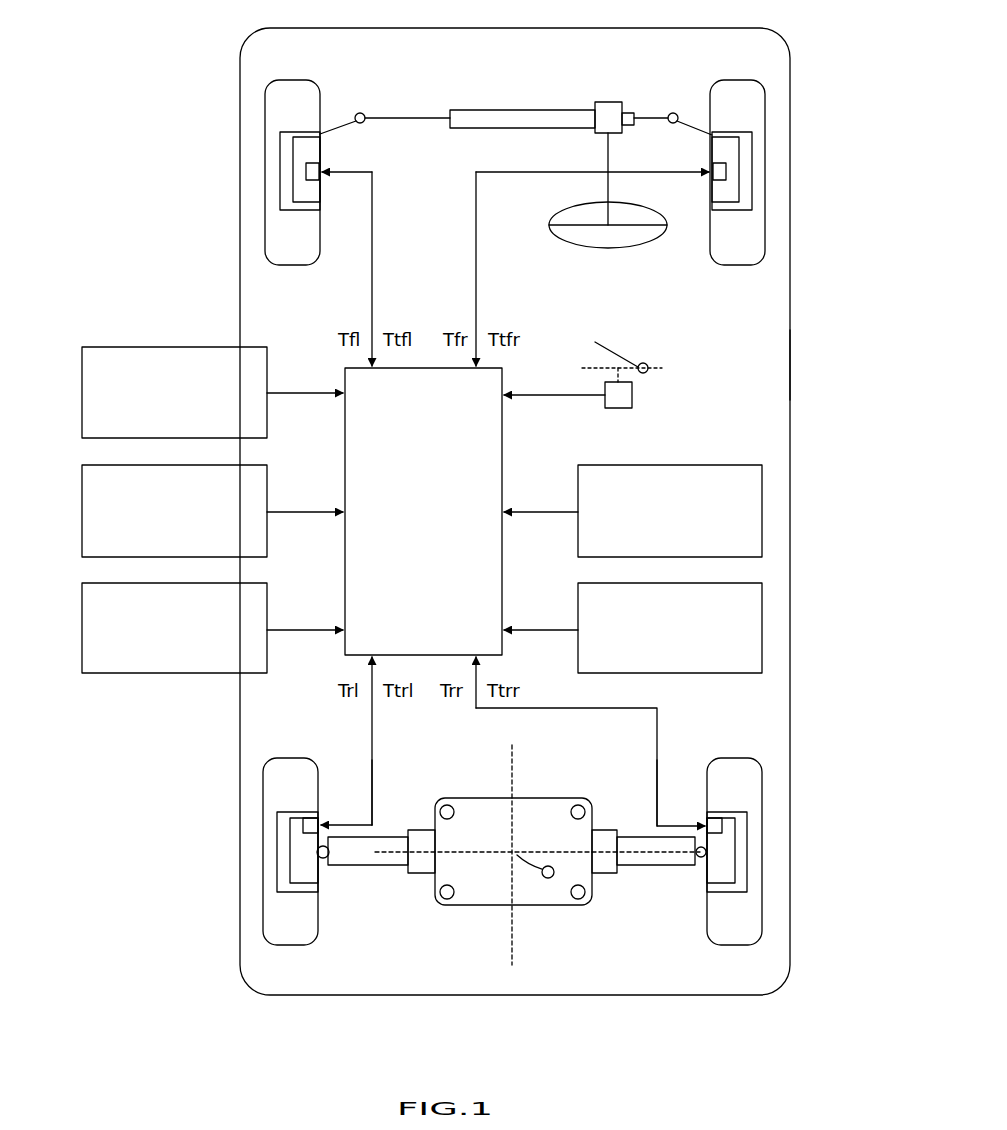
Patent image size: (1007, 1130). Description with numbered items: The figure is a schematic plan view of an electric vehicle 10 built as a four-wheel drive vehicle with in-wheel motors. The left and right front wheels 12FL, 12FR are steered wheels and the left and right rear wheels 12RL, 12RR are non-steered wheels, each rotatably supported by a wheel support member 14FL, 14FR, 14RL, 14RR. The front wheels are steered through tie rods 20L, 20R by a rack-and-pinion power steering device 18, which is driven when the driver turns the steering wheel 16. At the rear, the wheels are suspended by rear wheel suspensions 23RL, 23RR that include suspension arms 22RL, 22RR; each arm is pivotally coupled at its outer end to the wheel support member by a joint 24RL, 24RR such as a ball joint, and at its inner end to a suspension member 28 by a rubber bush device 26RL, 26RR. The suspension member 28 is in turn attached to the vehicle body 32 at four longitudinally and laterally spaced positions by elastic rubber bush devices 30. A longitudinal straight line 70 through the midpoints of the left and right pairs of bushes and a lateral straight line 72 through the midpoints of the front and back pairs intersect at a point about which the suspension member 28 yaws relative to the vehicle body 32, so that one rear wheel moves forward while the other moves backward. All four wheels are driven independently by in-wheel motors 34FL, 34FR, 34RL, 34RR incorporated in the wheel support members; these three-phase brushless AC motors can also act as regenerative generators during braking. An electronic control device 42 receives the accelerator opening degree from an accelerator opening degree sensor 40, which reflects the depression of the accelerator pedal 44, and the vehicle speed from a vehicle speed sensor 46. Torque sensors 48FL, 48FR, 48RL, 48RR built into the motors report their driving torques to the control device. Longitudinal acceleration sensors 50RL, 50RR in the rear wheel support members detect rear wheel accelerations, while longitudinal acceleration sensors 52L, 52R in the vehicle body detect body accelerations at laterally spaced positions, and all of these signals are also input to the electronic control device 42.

The electric vehicle 10 is at (242, 40).
The left front wheel 12FL is at (265, 119).
The right front wheel 12FR is at (765, 120).
The left rear wheel 12RL is at (263, 905).
The right rear wheel 12RR is at (762, 905).
The wheel support member 14FL is at (280, 195).
The wheel support member 14FR is at (752, 200).
The wheel support member 14RL is at (277, 815).
The wheel support member 14RR is at (747, 805).
The steering wheel 16 is at (590, 248).
The rack-and-pinion power steering device 18 is at (548, 105).
The tie rod 20L is at (340, 130).
The tie rod 20R is at (693, 130).
The suspension arm 22RL is at (355, 862).
The suspension arm 22RR is at (675, 862).
The rear wheel suspension 23RL is at (377, 820).
The rear wheel suspension 23RR is at (645, 821).
The joint 24RL is at (325, 858).
The joint 24RR is at (702, 858).
The rubber bush device 26RL is at (415, 830).
The rubber bush device 26RR is at (603, 830).
The suspension member 28 is at (543, 798).
The rubber bush devices 30 is at (449, 815).
The vehicle body 32 is at (791, 360).
The in-wheel motor 34FL is at (293, 171).
The in-wheel motor 34FR is at (739, 170).
The in-wheel motor 34RL is at (290, 851).
The in-wheel motor 34RR is at (735, 850).
The accelerator opening degree sensor 40 is at (633, 396).
The electronic control device 42 is at (423, 511).
The accelerator pedal 44 is at (610, 346).
The vehicle speed sensor 46 is at (82, 393).
The torque sensor 48FL is at (313, 162).
The torque sensor 48FR is at (717, 160).
The torque sensor 48RL is at (312, 818).
The torque sensor 48RR is at (713, 818).
The longitudinal acceleration sensor 50RL is at (82, 512).
The longitudinal acceleration sensor 50RR is at (762, 512).
The longitudinal acceleration sensor 52L is at (82, 630).
The longitudinal acceleration sensor 52R is at (762, 630).
The straight line 70 is at (505, 772).
The straight line 72 is at (457, 853).